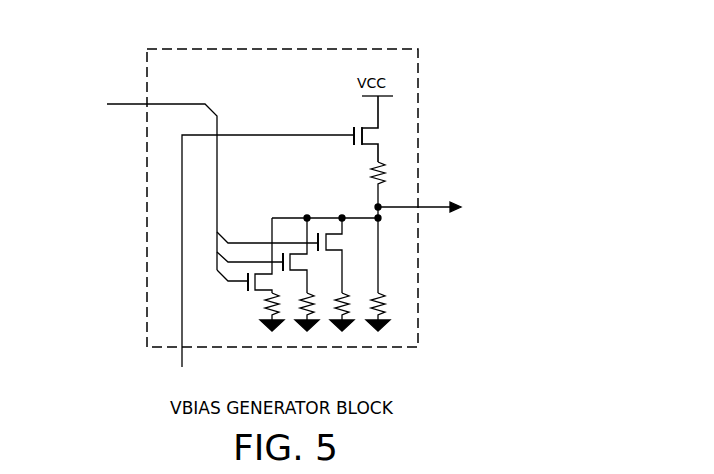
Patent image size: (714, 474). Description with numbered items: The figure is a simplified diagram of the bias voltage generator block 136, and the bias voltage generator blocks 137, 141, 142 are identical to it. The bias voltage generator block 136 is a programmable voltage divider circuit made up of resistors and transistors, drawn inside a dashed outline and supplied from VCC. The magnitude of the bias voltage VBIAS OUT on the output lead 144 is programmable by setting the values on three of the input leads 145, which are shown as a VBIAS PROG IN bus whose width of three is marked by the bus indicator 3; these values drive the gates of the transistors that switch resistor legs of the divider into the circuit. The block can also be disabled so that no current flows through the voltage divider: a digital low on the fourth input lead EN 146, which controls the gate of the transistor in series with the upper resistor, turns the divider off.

The input leads 3 is at (133, 109).
The input leads 145 is at (118, 107).
The output lead 144 is at (445, 203).
The fourth input lead EN 146 is at (182, 358).
The bias voltage generator block 136 is at (411, 48).
The bias voltage generator block 137 is at (282, 198).
The bias voltage generator block 141 is at (282, 198).
The bias voltage generator block 142 is at (282, 198).